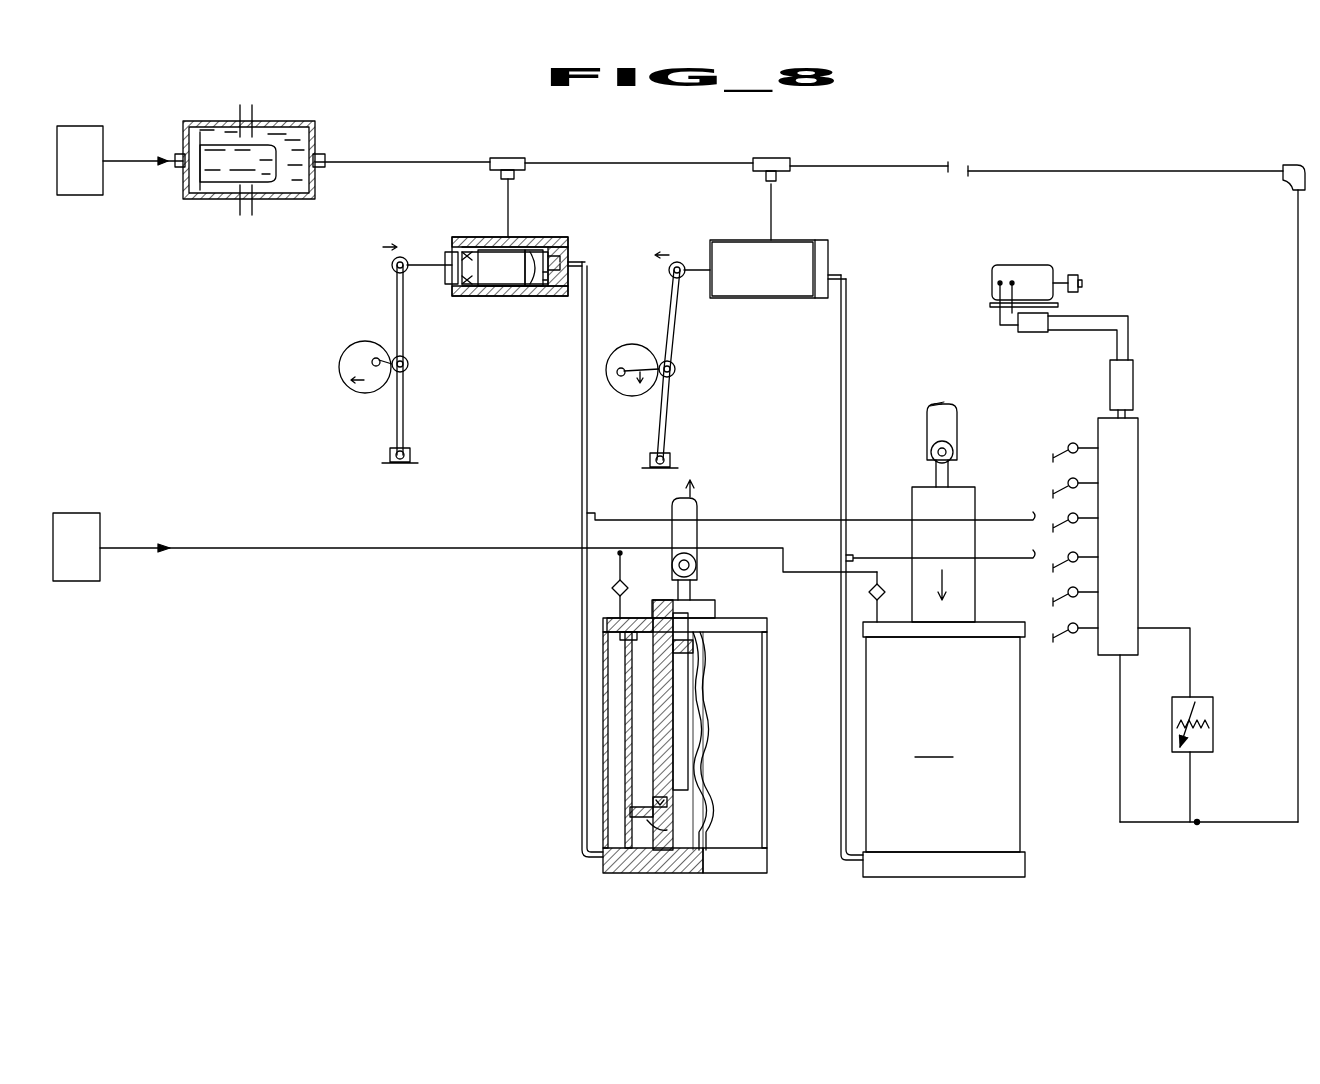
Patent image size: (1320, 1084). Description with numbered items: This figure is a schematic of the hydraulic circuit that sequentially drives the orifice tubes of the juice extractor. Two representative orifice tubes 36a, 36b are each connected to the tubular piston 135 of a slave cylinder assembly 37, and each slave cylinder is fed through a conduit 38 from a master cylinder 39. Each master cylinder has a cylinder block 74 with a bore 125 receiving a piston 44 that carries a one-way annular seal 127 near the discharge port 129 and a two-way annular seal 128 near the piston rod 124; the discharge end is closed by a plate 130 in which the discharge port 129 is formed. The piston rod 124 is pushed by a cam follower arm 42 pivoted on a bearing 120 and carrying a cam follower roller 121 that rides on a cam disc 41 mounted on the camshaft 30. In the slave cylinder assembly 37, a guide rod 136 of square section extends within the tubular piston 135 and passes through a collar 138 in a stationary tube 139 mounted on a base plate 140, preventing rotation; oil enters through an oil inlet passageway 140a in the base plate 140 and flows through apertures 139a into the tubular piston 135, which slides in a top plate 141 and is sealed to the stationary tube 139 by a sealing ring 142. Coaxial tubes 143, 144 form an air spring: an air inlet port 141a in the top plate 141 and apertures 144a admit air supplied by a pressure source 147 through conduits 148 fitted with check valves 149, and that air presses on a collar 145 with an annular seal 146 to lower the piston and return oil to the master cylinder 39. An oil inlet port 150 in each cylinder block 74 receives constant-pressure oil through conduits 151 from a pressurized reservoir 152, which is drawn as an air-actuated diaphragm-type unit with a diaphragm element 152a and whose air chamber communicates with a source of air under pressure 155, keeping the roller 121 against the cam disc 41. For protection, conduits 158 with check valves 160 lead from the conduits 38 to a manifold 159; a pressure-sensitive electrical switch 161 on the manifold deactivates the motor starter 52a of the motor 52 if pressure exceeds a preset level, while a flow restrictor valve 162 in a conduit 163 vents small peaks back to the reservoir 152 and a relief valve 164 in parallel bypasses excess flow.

The camshaft 30 is at (376, 358).
The orifice tube 36a is at (927, 410).
The orifice tube 36b is at (692, 503).
The slave cylinder assembly 37 is at (600, 762).
The conduit 38 is at (582, 482).
The master cylinder 39 is at (455, 238).
The cam disc 41 is at (339, 364).
The cam follower arm 42 is at (397, 296).
The piston 44 is at (495, 297).
The motor 52 is at (1025, 270).
The motor starter 52a is at (1033, 332).
The cylinder block 74 is at (486, 237).
The bearing 120 is at (405, 452).
The cam follower roller 121 is at (408, 368).
The piston rod 124 is at (420, 265).
The bore 125 is at (538, 296).
The annular seal 127 is at (540, 252).
The annular seal 128 is at (462, 290).
The discharge port 129 is at (545, 275).
The plate 130 is at (560, 262).
The tubular piston 135 is at (912, 490).
The guide rod 136 is at (688, 700).
The collar 138 is at (693, 647).
The stationary tube 139 is at (700, 740).
The apertures 139a is at (660, 665).
The base plate 140 is at (863, 868).
The oil inlet passageway 140a is at (658, 875).
The top plate 141 is at (740, 625).
The air inlet port 141a is at (620, 625).
The sealing ring 142 is at (667, 802).
The tube 143 is at (603, 695).
The tube 144 is at (625, 714).
The apertures 144a is at (620, 636).
The collar 145 is at (667, 826).
The annular seal 146 is at (630, 812).
The pressure source 147 is at (100, 530).
The conduits 148 is at (305, 548).
The check valve 149 is at (648, 572).
The oil inlet port 150 is at (511, 237).
The conduits 151 is at (675, 162).
The pressurized reservoir 152 is at (315, 125).
The filter baffle 152a is at (205, 126).
The source of air under pressure 155 is at (100, 190).
The conduits 158 is at (1052, 452).
The manifold 159 is at (1133, 520).
The check valve 160 is at (1055, 458).
The pressure-sensitive electrical switch 161 is at (1133, 385).
The flow restrictor valve 162 is at (1130, 730).
The conduit 163 is at (1118, 812).
The relief valve 164 is at (1213, 730).